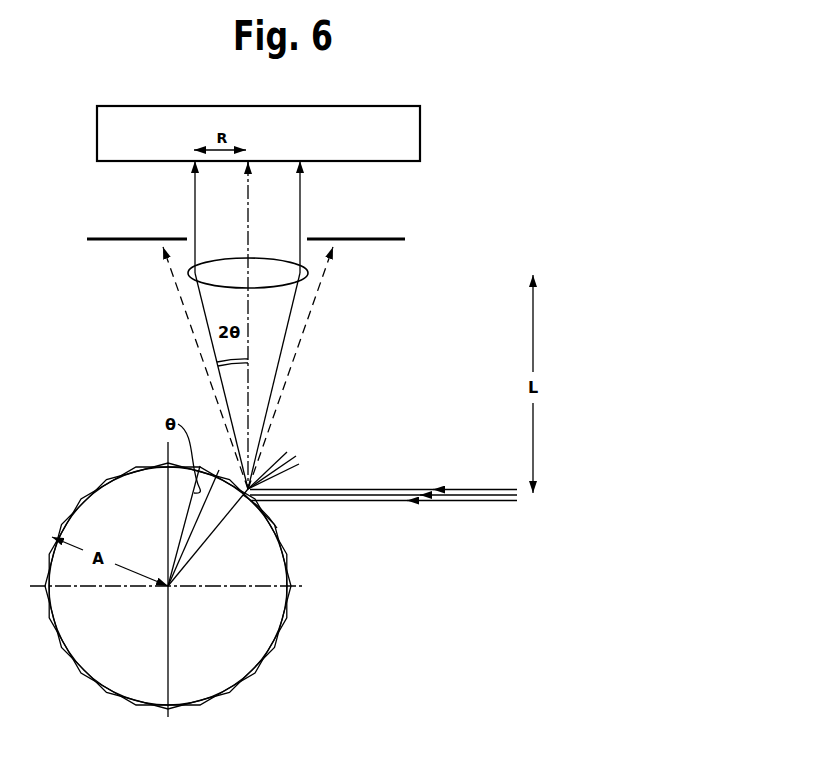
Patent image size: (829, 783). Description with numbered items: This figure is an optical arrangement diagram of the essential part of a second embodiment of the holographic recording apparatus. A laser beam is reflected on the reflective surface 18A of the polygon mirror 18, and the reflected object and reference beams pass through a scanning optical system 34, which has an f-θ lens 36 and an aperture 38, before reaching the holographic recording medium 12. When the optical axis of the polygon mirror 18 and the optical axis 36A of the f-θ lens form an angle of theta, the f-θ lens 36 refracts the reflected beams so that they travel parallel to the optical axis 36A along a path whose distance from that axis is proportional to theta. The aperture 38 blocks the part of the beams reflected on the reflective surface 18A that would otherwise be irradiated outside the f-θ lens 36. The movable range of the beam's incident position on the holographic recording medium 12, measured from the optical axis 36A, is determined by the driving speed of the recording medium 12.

The holographic recording medium 12 is at (421, 134).
The scanning optical system 34 is at (283, 249).
The f-θ lens 36 is at (306, 271).
The optical axis of the f-θ lens 36A is at (251, 190).
The aperture 38 is at (385, 239).
The polygon mirror 18 is at (302, 607).
The reflective surface of the polygon mirror 18A is at (270, 514).